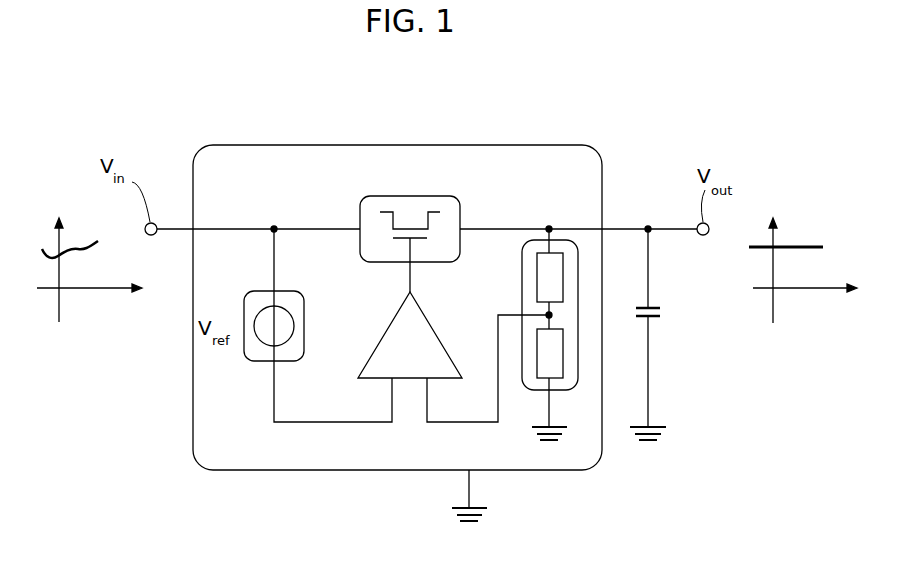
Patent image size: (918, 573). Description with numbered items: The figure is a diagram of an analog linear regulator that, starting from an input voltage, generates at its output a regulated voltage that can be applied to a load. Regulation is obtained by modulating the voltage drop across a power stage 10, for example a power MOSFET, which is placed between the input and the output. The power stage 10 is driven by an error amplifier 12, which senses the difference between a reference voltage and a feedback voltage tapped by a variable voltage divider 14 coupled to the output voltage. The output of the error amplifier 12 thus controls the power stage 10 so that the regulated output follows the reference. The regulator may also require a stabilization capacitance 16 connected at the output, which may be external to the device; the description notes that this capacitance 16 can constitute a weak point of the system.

The power stage 10 is at (362, 204).
The error amplifier 12 is at (410, 370).
The voltage divider 14 is at (568, 387).
The stabilization capacitance 16 is at (656, 318).